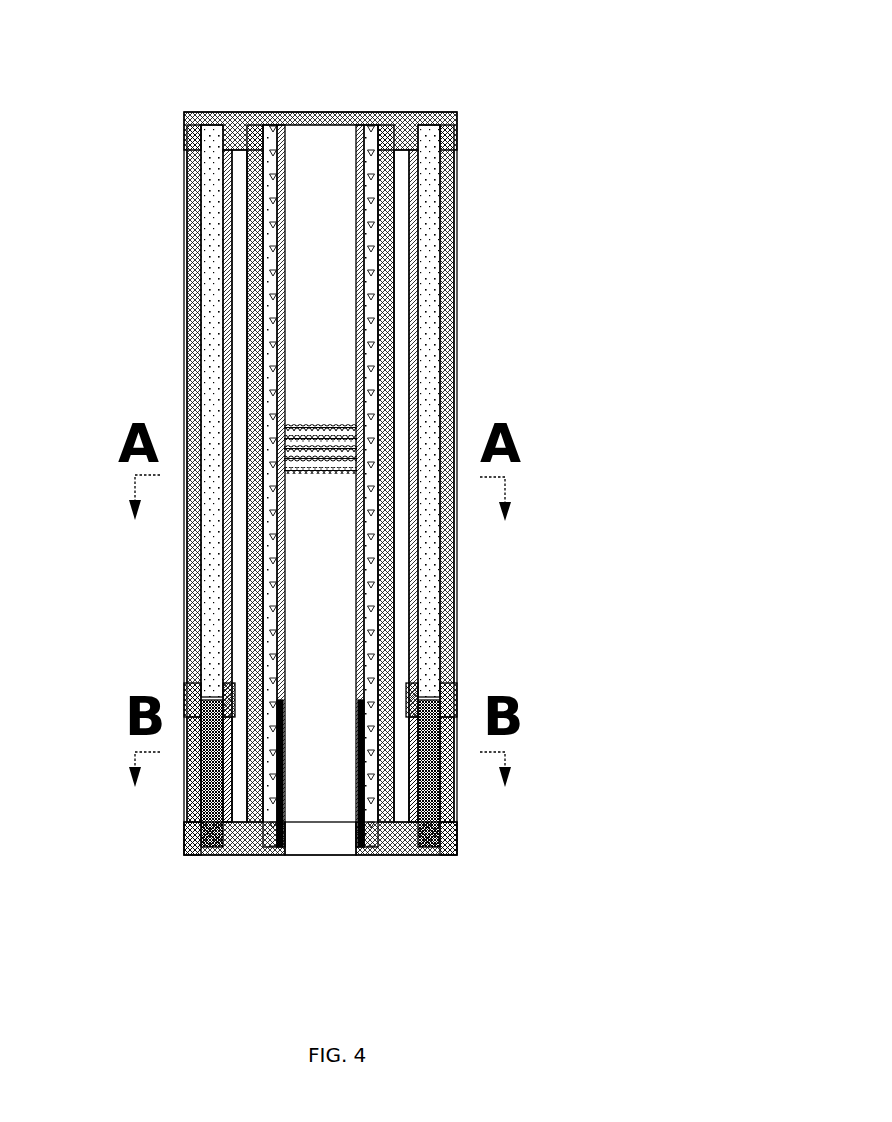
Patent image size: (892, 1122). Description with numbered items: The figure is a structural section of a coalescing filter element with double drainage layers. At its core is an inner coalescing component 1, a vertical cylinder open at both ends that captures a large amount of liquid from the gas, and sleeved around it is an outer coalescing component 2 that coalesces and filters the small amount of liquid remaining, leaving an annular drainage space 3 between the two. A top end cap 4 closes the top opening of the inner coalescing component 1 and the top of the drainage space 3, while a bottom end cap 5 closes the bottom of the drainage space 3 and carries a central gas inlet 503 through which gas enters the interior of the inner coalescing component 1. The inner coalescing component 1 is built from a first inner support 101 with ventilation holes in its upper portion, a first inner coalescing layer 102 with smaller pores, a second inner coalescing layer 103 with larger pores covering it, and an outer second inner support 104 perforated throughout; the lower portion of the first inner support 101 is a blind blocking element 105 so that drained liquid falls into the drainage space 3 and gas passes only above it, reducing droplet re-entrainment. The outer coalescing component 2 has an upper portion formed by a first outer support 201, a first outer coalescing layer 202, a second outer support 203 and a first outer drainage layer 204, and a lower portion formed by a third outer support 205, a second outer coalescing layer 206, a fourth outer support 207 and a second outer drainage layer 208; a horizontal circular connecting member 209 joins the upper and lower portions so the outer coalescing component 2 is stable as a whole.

The inner coalescing component 1 is at (408, 507).
The outer coalescing component 2 is at (468, 386).
The annular drainage space 3 is at (400, 317).
The top end cap 4 is at (328, 112).
The bottom end cap 5 is at (220, 853).
The first inner support 101 is at (273, 320).
The first inner coalescing layer 102 is at (253, 288).
The second inner coalescing layer 103 is at (257, 253).
The second inner support 104 is at (247, 220).
The blocking element 105 is at (357, 792).
The first outer support 201 is at (417, 268).
The first outer coalescing layer 202 is at (430, 247).
The second outer support 203 is at (453, 218).
The first outer drainage layer 204 is at (455, 195).
The third outer support 205 is at (440, 853).
The second outer coalescing layer 206 is at (455, 817).
The fourth outer support 207 is at (453, 813).
The second outer drainage layer 208 is at (453, 792).
The connecting member 209 is at (457, 692).
The gas inlet 503 is at (318, 836).